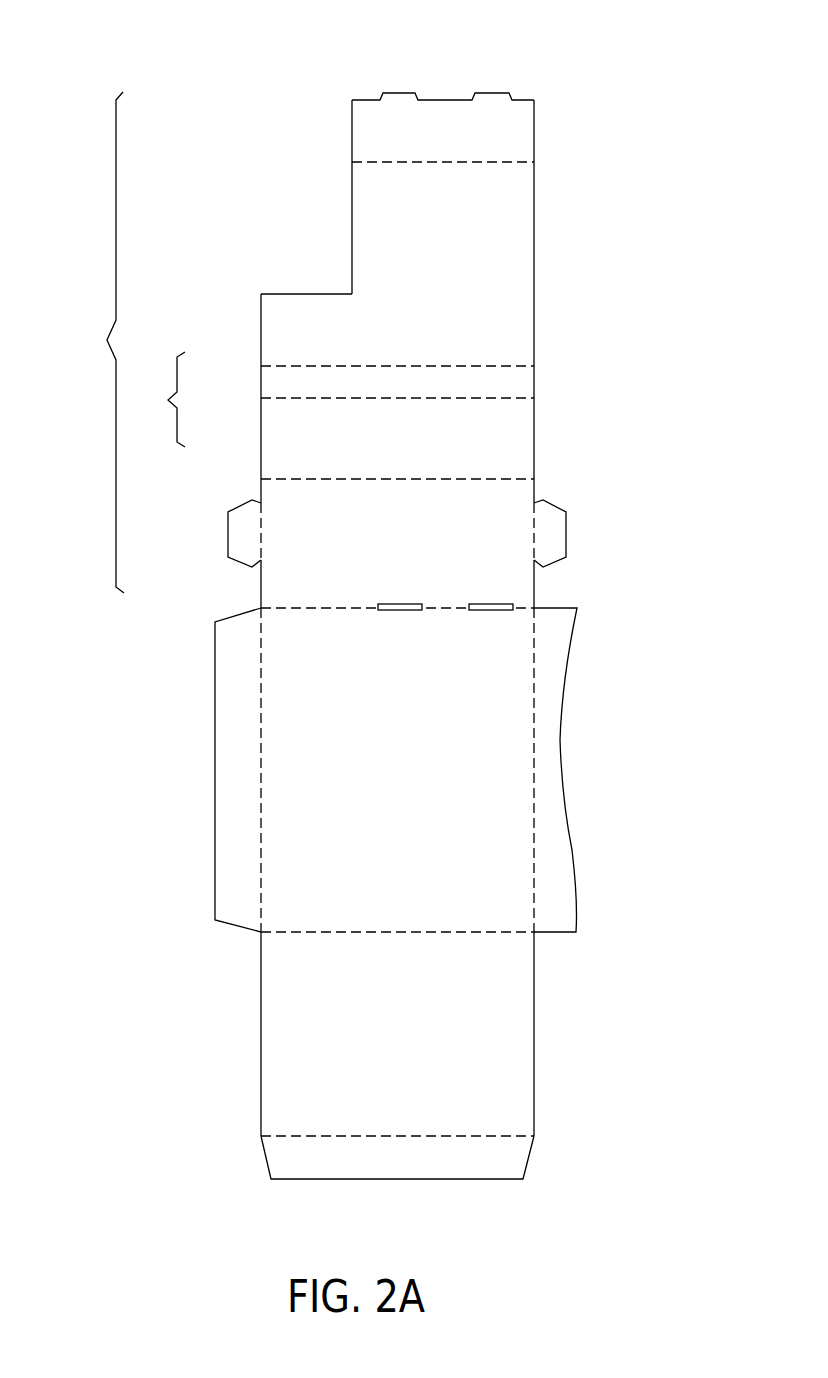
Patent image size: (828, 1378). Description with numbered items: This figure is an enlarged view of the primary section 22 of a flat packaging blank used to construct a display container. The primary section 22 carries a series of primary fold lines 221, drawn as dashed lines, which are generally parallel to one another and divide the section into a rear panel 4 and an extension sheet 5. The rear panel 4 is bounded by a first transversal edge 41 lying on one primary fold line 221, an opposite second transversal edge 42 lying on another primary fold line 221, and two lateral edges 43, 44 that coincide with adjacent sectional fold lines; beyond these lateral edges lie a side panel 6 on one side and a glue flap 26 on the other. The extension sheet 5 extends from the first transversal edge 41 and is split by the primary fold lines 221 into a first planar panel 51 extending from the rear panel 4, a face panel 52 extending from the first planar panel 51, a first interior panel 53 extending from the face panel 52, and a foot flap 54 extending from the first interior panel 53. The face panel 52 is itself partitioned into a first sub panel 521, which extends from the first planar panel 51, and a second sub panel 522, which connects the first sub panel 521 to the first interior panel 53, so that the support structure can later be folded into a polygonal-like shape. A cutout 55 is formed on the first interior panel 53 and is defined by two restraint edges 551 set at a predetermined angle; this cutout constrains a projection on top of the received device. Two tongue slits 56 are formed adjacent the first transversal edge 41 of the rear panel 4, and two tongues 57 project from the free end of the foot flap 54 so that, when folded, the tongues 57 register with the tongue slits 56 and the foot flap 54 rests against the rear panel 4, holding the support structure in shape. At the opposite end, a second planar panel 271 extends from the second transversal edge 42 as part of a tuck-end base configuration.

The primary section 22 is at (448, 72).
The primary fold lines 221 is at (487, 162).
The extension sheet 5 is at (106, 342).
The tongues 57 is at (395, 98).
The foot flap 54 is at (365, 138).
The cutout 55 is at (240, 184).
The restraint edges 551 is at (352, 232).
The first interior panel 53 is at (280, 325).
The face panel 52 is at (161, 399).
The second sub panel 522 is at (272, 383).
The first sub panel 521 is at (290, 437).
The first planar panel 51 is at (290, 492).
The tongue slits 56 is at (380, 604).
The rear panel 4 is at (327, 793).
The first transversal edge 41 is at (290, 610).
The lateral edge 44 is at (256, 730).
The lateral edge 43 is at (533, 826).
The second transversal edge 42 is at (463, 930).
The glue flap 26 is at (215, 869).
The side panel 6 is at (558, 652).
The second planar panel 271 is at (389, 1117).